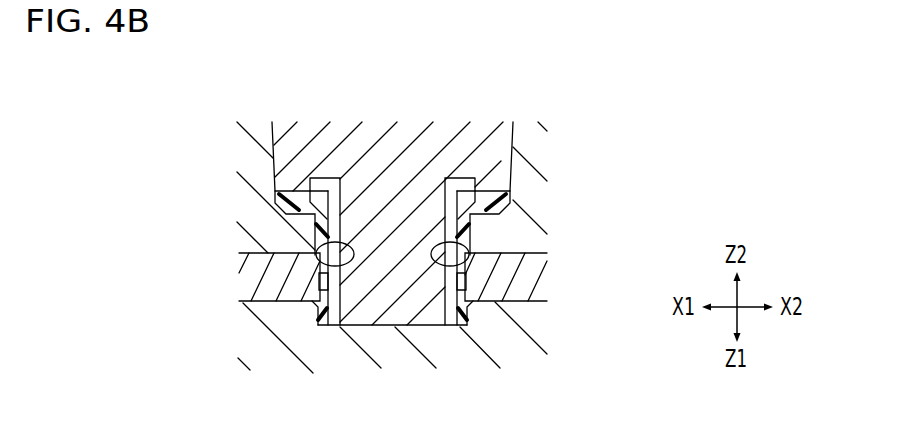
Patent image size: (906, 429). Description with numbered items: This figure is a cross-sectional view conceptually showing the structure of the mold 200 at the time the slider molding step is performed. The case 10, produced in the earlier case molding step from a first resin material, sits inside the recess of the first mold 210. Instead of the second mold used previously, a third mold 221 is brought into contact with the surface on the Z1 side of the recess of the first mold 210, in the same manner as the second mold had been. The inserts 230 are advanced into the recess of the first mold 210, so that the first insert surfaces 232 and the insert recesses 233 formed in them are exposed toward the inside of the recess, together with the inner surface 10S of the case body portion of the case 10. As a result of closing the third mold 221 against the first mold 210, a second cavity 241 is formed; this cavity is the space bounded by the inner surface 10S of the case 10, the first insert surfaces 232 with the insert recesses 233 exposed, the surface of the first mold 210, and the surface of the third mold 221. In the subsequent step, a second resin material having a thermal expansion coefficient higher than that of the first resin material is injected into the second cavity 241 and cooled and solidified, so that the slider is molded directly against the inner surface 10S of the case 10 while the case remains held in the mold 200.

The mold 200 is at (223, 113).
The third mold 221 is at (384, 141).
The second cavity 241 is at (311, 178).
The inner surface 10S is at (328, 217).
The case 10 is at (278, 193).
The first insert surfaces 232 is at (315, 242).
The inserts 230 is at (262, 285).
The insert recesses 233 is at (327, 284).
The first mold 210 is at (263, 333).